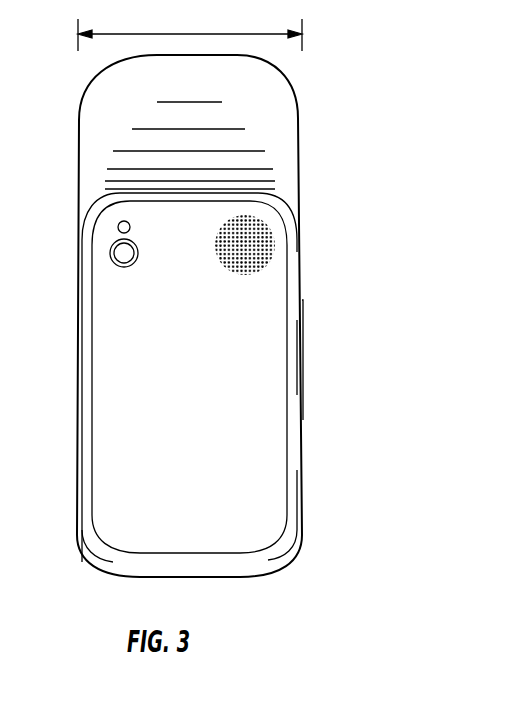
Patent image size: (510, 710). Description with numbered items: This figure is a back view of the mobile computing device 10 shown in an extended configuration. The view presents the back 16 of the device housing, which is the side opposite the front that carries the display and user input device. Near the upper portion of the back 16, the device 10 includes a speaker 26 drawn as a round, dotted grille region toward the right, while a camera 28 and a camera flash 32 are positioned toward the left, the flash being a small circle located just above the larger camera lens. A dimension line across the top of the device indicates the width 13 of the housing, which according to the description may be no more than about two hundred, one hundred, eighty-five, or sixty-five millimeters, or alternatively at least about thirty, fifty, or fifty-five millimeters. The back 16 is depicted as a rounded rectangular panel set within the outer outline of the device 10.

The mobile computing device 10 is at (303, 81).
The width 13 is at (178, 33).
The back 16 is at (199, 423).
The speaker 26 is at (258, 242).
The camera 28 is at (120, 255).
The camera flash 32 is at (118, 224).